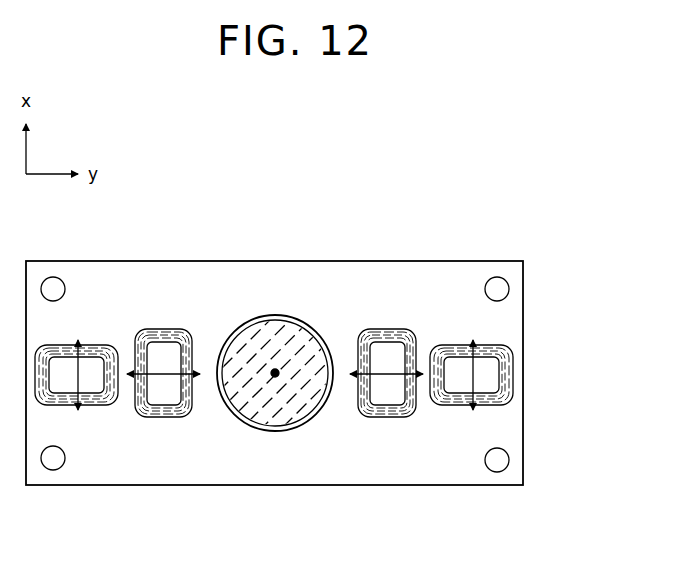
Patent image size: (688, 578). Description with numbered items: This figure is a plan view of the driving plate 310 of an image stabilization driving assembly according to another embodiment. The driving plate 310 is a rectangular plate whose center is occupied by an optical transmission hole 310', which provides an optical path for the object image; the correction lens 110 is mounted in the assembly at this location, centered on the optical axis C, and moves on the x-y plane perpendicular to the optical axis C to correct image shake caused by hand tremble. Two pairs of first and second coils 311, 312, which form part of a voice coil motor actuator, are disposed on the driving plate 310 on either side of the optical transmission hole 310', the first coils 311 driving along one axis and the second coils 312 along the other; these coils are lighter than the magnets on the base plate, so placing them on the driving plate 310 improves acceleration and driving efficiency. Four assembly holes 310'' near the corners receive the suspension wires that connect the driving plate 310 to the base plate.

The driving plate 310 is at (274, 348).
The optical transmission hole 310' is at (275, 321).
The assembly holes 310'' is at (340, 374).
The correction lens 110 is at (292, 338).
The first coils 311 is at (160, 418).
The second coils 312 is at (85, 406).
The optical axis C is at (275, 377).